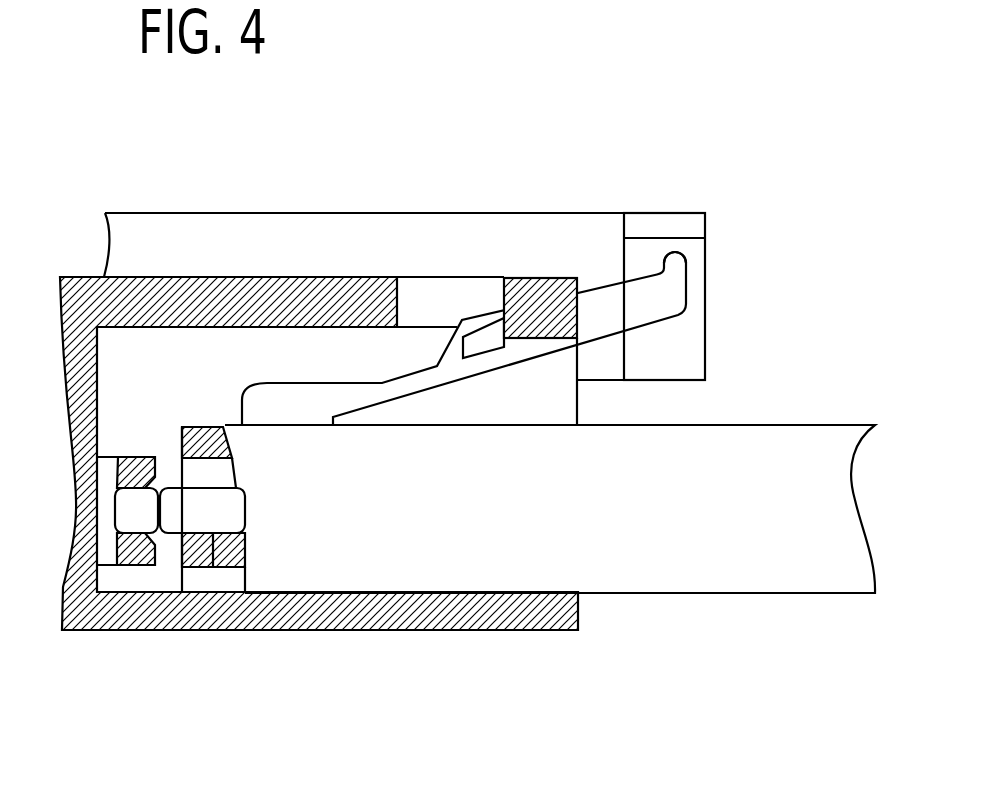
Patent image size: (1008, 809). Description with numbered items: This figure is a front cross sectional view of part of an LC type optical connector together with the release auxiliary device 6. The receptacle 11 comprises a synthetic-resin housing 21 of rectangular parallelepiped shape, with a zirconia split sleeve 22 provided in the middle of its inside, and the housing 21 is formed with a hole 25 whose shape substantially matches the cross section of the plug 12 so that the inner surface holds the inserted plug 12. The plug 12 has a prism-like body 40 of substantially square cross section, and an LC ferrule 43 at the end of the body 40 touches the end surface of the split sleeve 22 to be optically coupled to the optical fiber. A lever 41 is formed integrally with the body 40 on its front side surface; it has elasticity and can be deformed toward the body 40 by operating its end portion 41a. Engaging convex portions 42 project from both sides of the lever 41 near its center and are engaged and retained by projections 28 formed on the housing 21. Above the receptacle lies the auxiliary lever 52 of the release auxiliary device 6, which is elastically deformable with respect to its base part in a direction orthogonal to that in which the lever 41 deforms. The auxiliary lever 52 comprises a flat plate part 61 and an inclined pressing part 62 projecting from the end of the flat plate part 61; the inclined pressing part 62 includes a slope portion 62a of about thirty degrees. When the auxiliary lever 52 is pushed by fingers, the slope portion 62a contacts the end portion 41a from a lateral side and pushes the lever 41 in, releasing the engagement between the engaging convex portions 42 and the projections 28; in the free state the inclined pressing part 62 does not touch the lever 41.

The release auxiliary device 6 is at (497, 239).
The receptacle 11 is at (340, 640).
The plug 12 is at (807, 600).
The housing 21 is at (443, 632).
The split sleeve 22 is at (130, 518).
The hole 25 is at (550, 592).
The projection 28 is at (537, 285).
The body 40 is at (693, 582).
The lever 41 is at (503, 284).
The end portion 41a is at (675, 252).
The engaging convex portion 42 is at (483, 340).
The LC ferrule 43 is at (210, 518).
The auxiliary lever 52 is at (364, 206).
The flat plate part 61 is at (266, 222).
The inclined pressing part 62 is at (757, 296).
The slope portion 62a is at (697, 275).